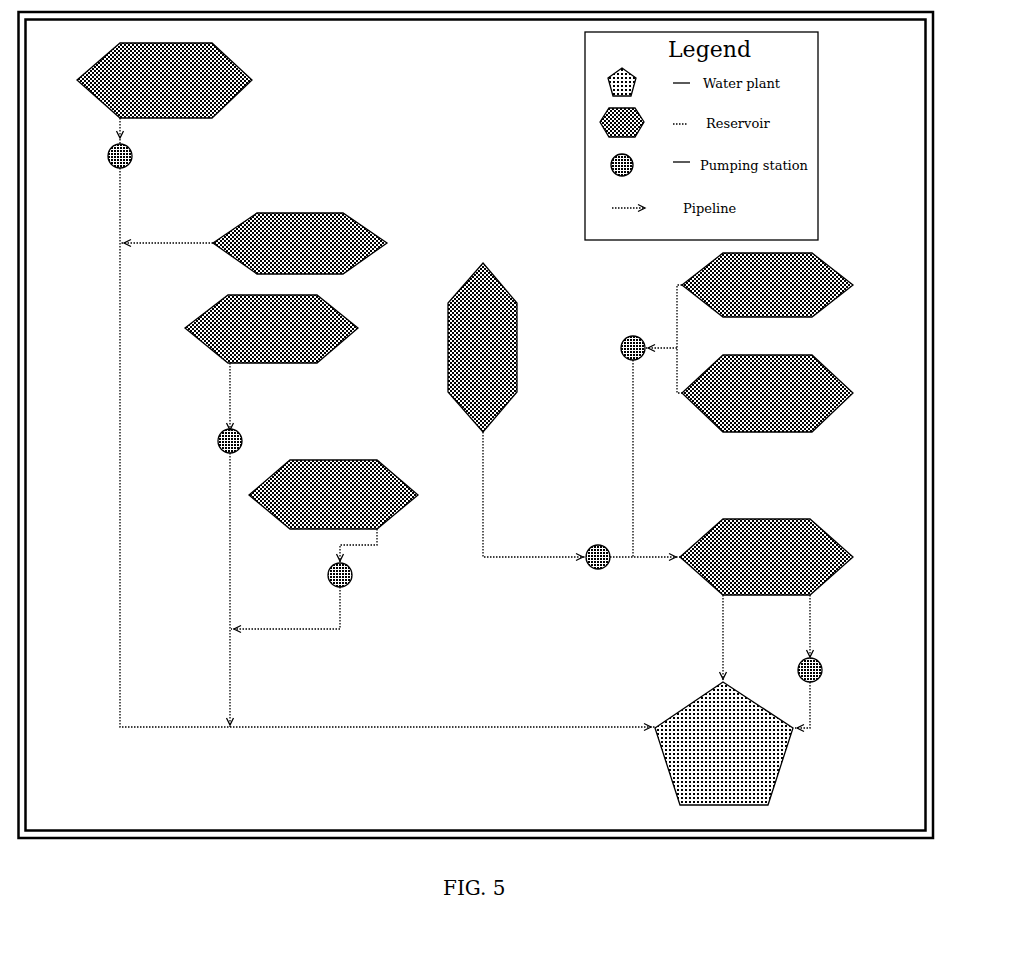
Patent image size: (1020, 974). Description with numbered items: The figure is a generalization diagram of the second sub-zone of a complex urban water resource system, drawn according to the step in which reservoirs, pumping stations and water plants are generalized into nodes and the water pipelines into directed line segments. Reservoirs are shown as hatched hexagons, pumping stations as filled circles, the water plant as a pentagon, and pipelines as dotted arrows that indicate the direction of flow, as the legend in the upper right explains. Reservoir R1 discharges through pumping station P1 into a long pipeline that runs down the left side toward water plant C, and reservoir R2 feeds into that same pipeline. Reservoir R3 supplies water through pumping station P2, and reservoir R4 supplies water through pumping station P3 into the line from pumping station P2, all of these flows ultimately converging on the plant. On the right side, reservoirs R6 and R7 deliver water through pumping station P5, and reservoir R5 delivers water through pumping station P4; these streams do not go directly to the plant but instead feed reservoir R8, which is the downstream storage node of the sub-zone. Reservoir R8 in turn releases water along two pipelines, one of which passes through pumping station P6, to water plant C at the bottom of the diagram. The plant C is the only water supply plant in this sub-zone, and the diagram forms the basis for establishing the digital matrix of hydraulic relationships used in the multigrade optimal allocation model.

The reservoir R1 is at (164, 80).
The reservoir R2 is at (300, 243).
The reservoir R3 is at (271, 329).
The reservoir R4 is at (333, 494).
The reservoir R5 is at (482, 347).
The reservoir R6 is at (767, 285).
The reservoir R7 is at (767, 393).
The reservoir R8 is at (766, 557).
The pumping station P1 is at (134, 160).
The pumping station P2 is at (257, 427).
The pumping station P3 is at (315, 589).
The pumping station P4 is at (595, 590).
The pumping station P5 is at (609, 333).
The pumping station P6 is at (833, 672).
The water plant C is at (724, 743).